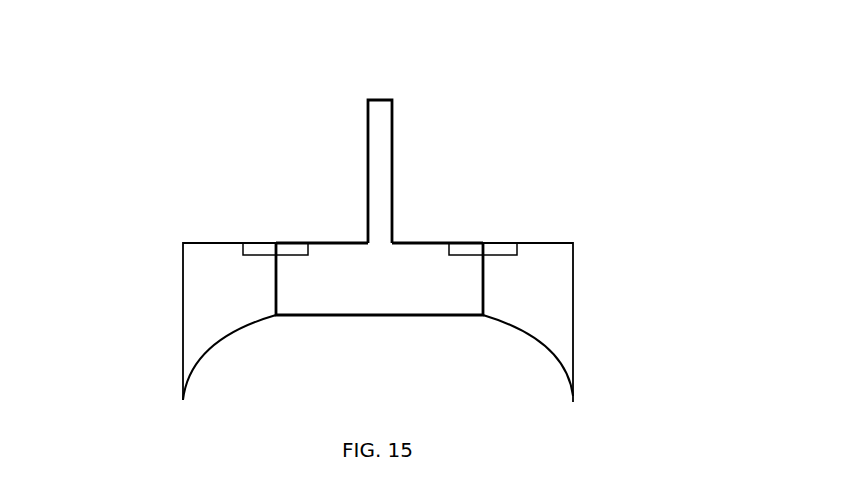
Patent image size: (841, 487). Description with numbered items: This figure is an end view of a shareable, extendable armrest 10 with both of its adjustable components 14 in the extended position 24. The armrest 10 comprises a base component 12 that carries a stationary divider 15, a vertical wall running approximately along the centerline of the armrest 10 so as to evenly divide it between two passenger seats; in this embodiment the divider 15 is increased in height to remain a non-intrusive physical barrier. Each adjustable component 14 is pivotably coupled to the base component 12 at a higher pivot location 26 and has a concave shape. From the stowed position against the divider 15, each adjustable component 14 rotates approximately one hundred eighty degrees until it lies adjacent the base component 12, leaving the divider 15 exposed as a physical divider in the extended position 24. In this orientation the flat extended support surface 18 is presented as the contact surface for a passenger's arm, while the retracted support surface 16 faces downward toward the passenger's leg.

The armrest 10 is at (600, 110).
The base component 12 is at (418, 288).
The adjustable component 14 is at (563, 288).
The stationary divider 15 is at (387, 158).
The retracted support surface 16 is at (225, 337).
The extended support surface 18 is at (212, 248).
The extended position 24 is at (177, 113).
The pivot location 26 is at (276, 253).